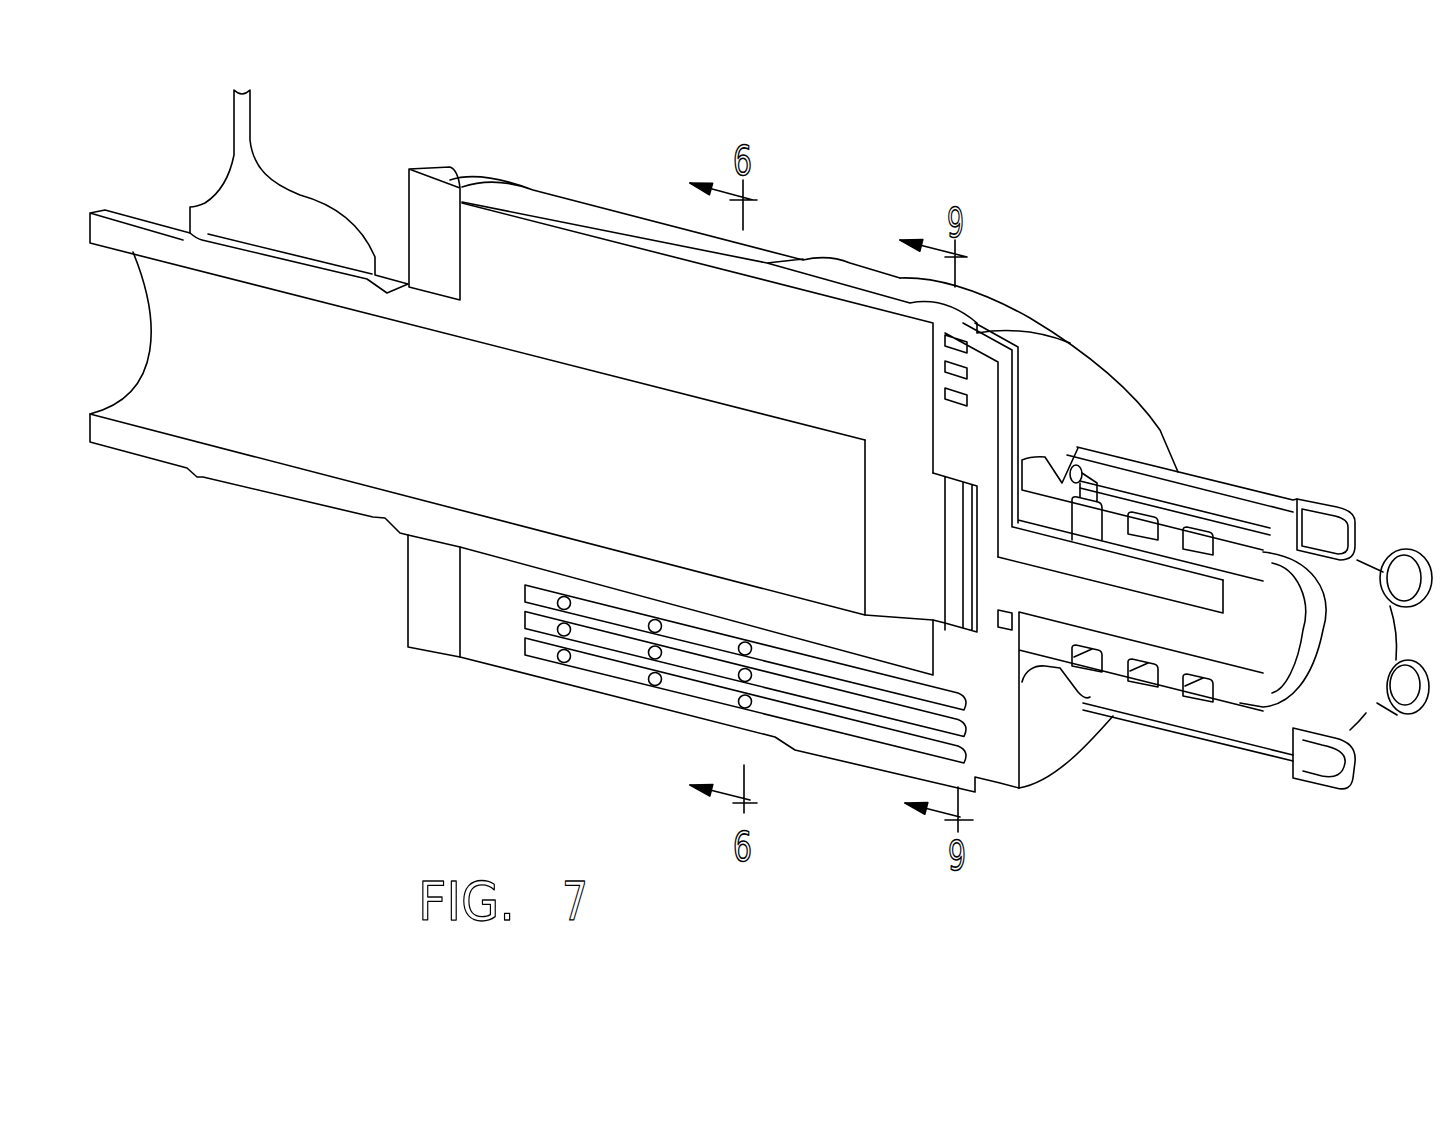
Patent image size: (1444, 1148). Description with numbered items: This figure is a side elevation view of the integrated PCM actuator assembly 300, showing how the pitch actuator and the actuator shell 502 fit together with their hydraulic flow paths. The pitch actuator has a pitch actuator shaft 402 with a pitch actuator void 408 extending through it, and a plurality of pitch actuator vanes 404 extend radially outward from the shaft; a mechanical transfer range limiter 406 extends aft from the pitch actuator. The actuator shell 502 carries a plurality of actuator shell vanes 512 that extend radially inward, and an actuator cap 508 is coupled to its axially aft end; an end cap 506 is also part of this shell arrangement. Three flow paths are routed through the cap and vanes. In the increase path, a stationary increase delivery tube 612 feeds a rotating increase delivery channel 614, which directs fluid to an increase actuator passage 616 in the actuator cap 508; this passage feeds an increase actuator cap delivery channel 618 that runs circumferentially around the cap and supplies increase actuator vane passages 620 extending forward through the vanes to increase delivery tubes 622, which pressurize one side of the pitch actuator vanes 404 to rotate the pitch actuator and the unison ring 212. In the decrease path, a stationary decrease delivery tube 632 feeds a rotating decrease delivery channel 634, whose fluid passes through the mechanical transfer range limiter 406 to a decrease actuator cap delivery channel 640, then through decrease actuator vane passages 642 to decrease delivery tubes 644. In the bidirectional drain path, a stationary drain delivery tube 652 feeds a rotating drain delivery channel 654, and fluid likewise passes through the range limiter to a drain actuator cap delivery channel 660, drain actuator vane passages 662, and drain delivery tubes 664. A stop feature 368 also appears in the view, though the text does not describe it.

The unison ring 212 is at (235, 120).
The integrated PCM actuator assembly 300 is at (863, 262).
The stop 368 is at (950, 640).
The pitch actuator shaft 402 is at (142, 457).
The pitch actuator vanes 404 is at (660, 330).
The mechanical transfer range limiter 406 is at (945, 560).
The pitch actuator void 408 is at (447, 411).
The actuator shell 502 is at (607, 213).
The end cap 506 is at (433, 605).
The actuator cap 508 is at (1140, 363).
The actuator shell vanes 512 is at (530, 663).
The stationary increase delivery tube 612 is at (1328, 535).
The rotating increase delivery channel 614 is at (1087, 670).
The increase actuator passage 616 is at (1003, 410).
The increase actuator cap delivery channel 618 is at (963, 353).
The increase actuator vane passages 620 is at (597, 663).
The increase delivery tubes 622 is at (653, 685).
The stationary decrease delivery tube 632 is at (1400, 623).
The rotating decrease delivery channel 634 is at (1200, 538).
The decrease actuator cap delivery channel 640 is at (950, 401).
The decrease actuator vane passages 642 is at (594, 607).
The decrease delivery tubes 644 is at (1087, 512).
The stationary drain delivery tube 652 is at (1407, 690).
The rotating drain delivery channel 654 is at (1143, 518).
The drain actuator cap delivery channel 660 is at (960, 377).
The drain actuator vane passages 662 is at (700, 665).
The drain delivery tubes 664 is at (742, 682).